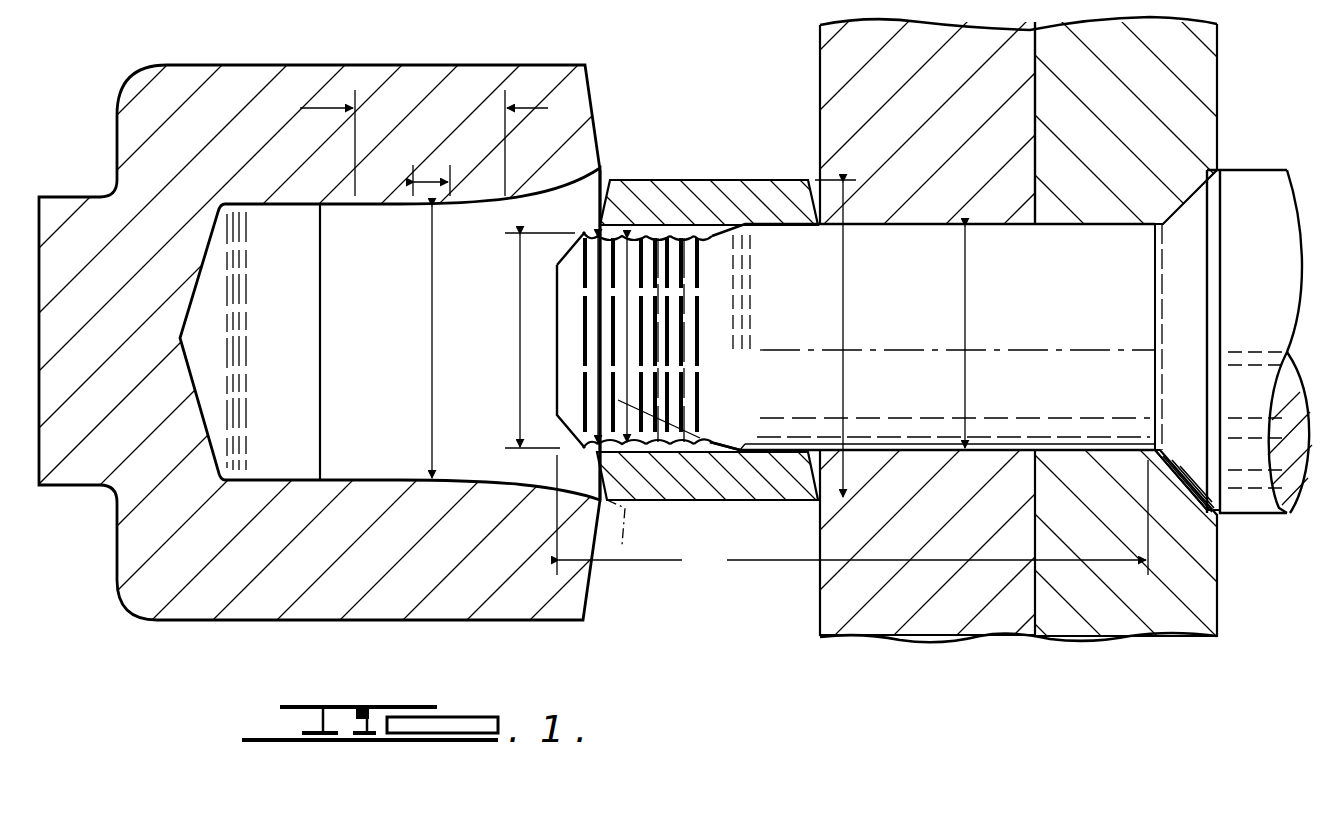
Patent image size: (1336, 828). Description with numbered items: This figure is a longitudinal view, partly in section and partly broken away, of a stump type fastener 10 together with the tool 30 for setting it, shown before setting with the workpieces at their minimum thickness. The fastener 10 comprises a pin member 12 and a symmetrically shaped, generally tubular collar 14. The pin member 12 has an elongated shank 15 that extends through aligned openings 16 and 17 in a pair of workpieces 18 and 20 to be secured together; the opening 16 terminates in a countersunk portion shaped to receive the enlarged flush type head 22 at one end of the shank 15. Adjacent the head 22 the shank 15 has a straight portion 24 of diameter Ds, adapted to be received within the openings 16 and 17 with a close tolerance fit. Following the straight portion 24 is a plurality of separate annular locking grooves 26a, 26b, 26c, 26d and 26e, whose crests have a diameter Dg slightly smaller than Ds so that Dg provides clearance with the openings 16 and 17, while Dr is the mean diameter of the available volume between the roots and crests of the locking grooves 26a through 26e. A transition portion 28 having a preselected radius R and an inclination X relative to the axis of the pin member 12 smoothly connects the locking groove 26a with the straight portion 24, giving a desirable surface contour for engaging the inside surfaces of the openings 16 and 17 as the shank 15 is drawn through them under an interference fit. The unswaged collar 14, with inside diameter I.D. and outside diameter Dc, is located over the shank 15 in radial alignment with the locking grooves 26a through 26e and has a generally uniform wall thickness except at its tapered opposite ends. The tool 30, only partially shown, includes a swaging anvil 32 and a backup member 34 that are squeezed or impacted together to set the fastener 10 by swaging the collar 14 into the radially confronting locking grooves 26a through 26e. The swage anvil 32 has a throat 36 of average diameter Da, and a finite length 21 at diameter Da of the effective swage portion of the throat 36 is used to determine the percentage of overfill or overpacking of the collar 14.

The fastener 10 is at (767, 584).
The pin member 12 is at (985, 456).
The tubular collar 14 is at (754, 178).
The elongated shank 15 is at (852, 518).
The opening 16 is at (1070, 224).
The opening 17 is at (924, 224).
The workpiece 18 is at (1147, 74).
The workpiece 20 is at (950, 70).
The finite length (dl) 21 is at (413, 197).
The enlarged flush type head 22 is at (1185, 286).
The straight portion 24 is at (1082, 448).
The locking groove 26a is at (712, 240).
The locking groove 26b is at (690, 236).
The locking groove 26c is at (659, 236).
The locking groove 26d is at (625, 236).
The locking groove 26e is at (597, 237).
The transition portion 28 is at (740, 444).
The tool 30 is at (404, 633).
The swaging anvil 32 is at (203, 606).
The backup member 34 is at (1268, 168).
The throat 36 is at (424, 137).
The average diameter of anvil throat Da is at (426, 342).
The crest diameter of locking grooves Dg is at (536, 340).
The inside diameter of collar I.D. is at (595, 340).
The mean diameter of groove volume Dr is at (629, 340).
The outside diameter of collar Dc is at (835, 338).
The diameter of straight portion Ds is at (962, 337).
The inclination of transition portion X is at (660, 412).
The radius of transition portion R is at (757, 437).